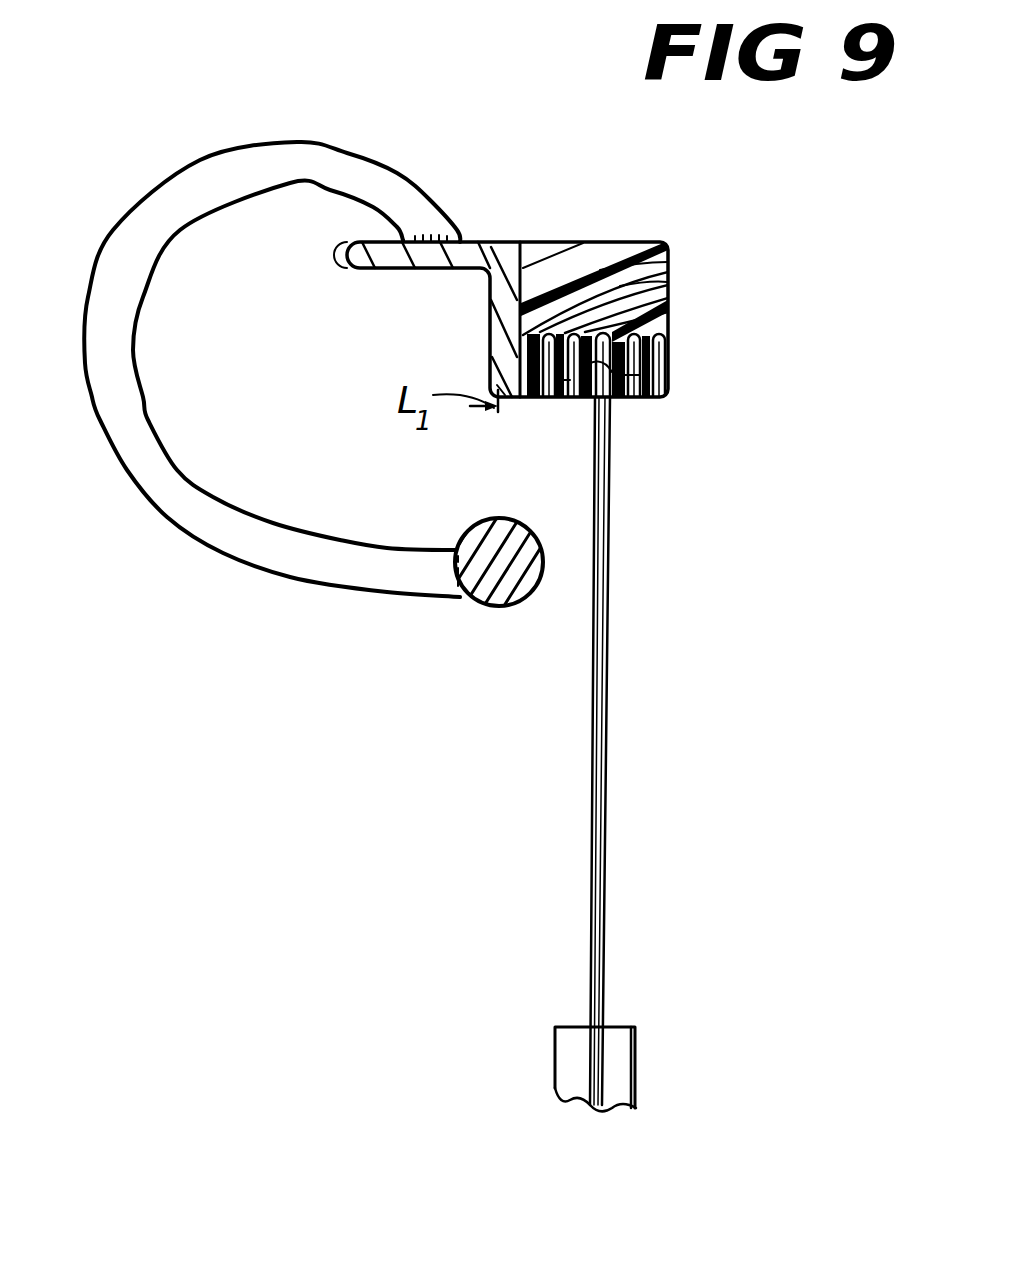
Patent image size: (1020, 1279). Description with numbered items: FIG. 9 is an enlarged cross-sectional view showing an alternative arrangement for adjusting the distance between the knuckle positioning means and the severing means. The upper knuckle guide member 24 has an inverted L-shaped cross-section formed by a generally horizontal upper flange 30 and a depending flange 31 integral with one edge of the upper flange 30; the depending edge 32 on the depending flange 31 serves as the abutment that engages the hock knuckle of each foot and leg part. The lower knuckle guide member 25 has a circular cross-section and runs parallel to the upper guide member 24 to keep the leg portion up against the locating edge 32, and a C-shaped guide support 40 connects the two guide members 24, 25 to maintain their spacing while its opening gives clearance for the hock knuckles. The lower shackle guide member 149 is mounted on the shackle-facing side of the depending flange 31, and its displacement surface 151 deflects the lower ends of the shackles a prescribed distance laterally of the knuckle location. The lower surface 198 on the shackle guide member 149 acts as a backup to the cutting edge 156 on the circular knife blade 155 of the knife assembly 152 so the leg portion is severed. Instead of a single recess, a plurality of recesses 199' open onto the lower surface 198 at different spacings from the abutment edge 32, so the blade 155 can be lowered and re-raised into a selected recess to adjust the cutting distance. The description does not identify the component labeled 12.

The earring assembly 12 is at (447, 433).
The upper knuckle guide member 24 is at (347, 257).
The lower knuckle guide member 25 is at (500, 596).
The upper flange 30 is at (410, 258).
The depending flange 31 is at (503, 350).
The depending edge 32 is at (510, 405).
The C-shaped guide support 40 is at (104, 280).
The lower shackle guide member 149 is at (636, 258).
The displacement surface 151 is at (640, 349).
The circular knife assembly 152 is at (632, 1026).
The circular knife blade 155 is at (606, 740).
The cutting edge 156 is at (567, 372).
The lower surface 198 is at (640, 372).
The recesses 199' is at (708, 297).